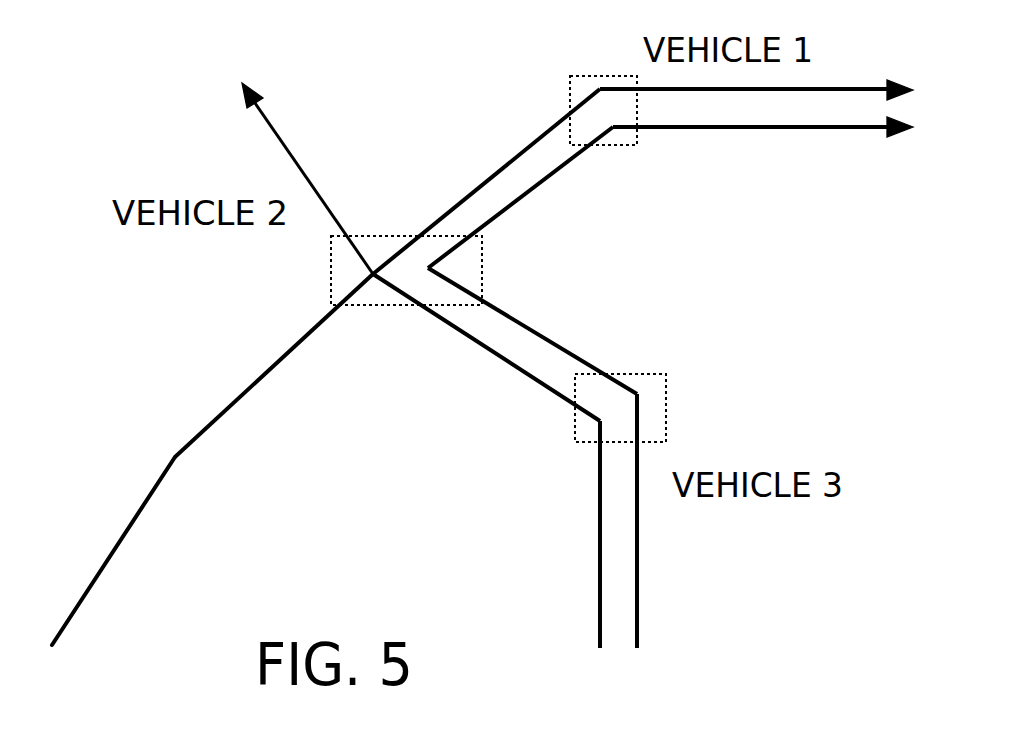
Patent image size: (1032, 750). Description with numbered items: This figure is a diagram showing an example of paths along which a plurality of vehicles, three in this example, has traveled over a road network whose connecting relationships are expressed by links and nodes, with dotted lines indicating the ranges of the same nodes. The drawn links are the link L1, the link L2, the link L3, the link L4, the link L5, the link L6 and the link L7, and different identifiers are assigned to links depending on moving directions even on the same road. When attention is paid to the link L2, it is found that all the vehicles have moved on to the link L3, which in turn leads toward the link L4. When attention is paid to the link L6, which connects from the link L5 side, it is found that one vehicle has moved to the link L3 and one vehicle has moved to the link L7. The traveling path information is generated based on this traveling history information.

The link L1 is at (133, 551).
The link L2 is at (274, 365).
The link L3 is at (493, 181).
The link L4 is at (756, 130).
The link L5 is at (663, 521).
The link L6 is at (505, 344).
The link L7 is at (307, 178).